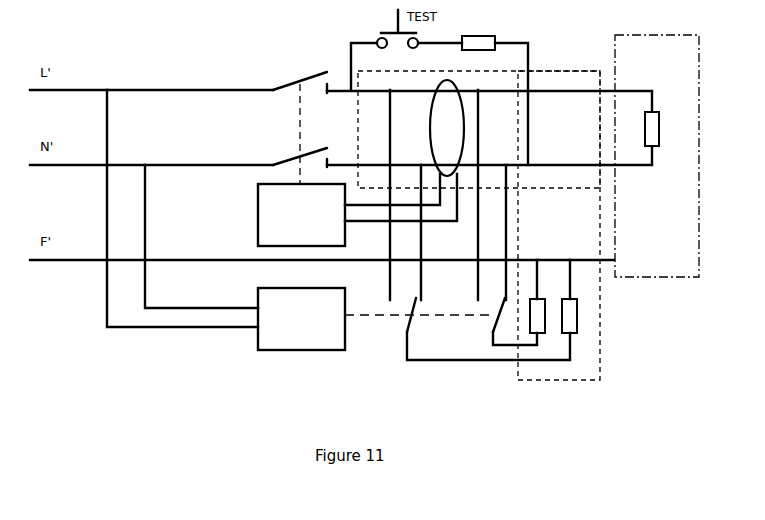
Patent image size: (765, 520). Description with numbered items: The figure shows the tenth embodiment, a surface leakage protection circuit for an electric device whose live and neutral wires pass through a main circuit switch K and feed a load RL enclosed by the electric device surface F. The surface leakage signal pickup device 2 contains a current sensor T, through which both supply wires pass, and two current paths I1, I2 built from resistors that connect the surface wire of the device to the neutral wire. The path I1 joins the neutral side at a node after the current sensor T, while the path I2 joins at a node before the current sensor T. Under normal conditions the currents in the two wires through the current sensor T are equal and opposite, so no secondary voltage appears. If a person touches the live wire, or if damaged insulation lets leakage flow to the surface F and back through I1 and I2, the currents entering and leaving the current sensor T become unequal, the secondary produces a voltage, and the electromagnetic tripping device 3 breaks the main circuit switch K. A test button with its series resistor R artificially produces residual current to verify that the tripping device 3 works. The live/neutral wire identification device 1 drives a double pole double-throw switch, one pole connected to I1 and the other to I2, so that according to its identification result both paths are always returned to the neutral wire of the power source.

The live/neutral wire identification device 1 is at (299, 339).
The surface leakage signal pickup device 2 is at (366, 108).
The electromagnetic tripping device 3 is at (270, 217).
The main circuit switch K is at (296, 126).
The current sensor T is at (466, 143).
The test resistor R is at (478, 29).
The load RL is at (663, 128).
The electric device surface F is at (655, 280).
The current path I1 is at (520, 304).
The current path I2 is at (494, 310).